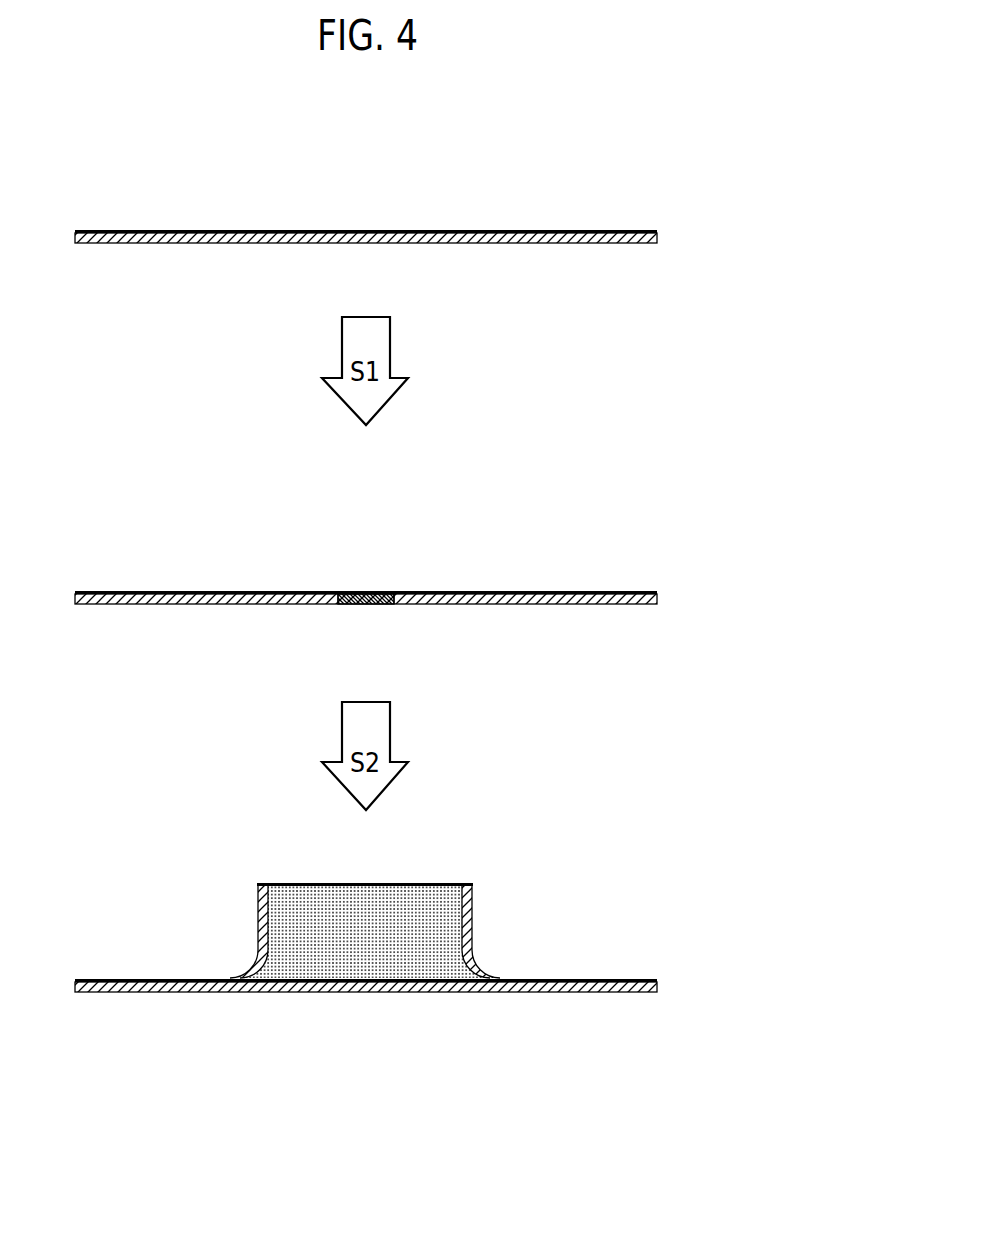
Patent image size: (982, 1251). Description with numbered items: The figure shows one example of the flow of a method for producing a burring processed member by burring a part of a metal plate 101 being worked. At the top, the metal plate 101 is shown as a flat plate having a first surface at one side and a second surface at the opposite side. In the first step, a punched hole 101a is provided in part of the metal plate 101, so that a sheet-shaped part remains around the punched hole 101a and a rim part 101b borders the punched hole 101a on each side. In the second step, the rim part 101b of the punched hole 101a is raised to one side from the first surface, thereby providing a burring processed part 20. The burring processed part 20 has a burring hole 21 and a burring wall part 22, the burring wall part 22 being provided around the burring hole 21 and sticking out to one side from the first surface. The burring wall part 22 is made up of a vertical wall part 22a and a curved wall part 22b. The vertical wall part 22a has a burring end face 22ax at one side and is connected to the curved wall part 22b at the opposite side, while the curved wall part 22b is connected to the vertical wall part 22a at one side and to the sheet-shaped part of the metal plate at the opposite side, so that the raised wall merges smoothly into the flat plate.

The metal plate 101 is at (398, 206).
The punched hole 101a is at (363, 590).
The rim part 101b is at (320, 590).
The burring processed part 20 is at (443, 900).
The burring hole 21 is at (389, 876).
The burring wall part 22 is at (420, 919).
The vertical wall part 22a is at (476, 907).
The burring end face 22ax is at (471, 877).
The curved wall part 22b is at (489, 967).